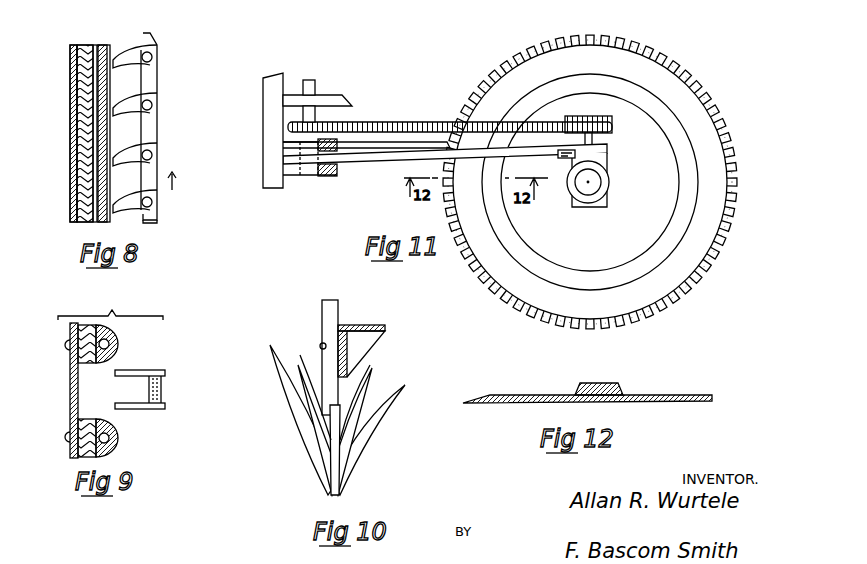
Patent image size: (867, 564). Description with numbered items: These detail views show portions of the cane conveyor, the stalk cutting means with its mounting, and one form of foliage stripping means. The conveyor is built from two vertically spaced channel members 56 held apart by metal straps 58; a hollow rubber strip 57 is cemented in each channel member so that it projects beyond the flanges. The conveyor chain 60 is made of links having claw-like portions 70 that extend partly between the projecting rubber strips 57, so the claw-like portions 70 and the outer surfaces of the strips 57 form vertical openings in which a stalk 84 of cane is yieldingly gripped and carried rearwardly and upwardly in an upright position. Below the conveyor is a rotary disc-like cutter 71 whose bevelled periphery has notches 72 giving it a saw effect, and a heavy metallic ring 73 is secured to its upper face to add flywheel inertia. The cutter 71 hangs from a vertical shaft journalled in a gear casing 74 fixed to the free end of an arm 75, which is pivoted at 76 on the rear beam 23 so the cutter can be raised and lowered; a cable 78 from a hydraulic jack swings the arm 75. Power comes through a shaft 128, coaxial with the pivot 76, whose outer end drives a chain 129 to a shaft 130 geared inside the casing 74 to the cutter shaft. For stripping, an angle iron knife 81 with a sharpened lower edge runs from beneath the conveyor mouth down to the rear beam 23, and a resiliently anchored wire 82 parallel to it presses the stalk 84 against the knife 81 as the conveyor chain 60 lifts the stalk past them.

In FIG. 11, the rear beam 23 is at (276, 158).
In FIG. 8, the channel members 56 is at (76, 150).
In FIG. 9, the channel members 56 is at (72, 350).
In FIG. 8, the rubber strip 57 is at (88, 192).
In FIG. 9, the rubber strip 57 is at (118, 336).
In FIG. 9, the metal straps 58 is at (70, 392).
In FIG. 8, the conveyor chain 60 is at (160, 127).
In FIG. 9, the conveyor chain 60 is at (179, 390).
In FIG. 8, the claw-like portions 70 is at (120, 99).
In FIG. 9, the claw-like portions 70 is at (140, 371).
In FIG. 11, the rotary disc-like cutter 71 is at (698, 123).
In FIG. 12, the rotary disc-like cutter 71 is at (521, 403).
In FIG. 11, the notches 72 is at (735, 184).
In FIG. 11, the metallic ring 73 is at (507, 237).
In FIG. 12, the metallic ring 73 is at (614, 383).
In FIG. 11, the gear casing 74 is at (610, 182).
In FIG. 11, the arm 75 is at (382, 164).
In FIG. 11, the pivot 76 is at (302, 178).
In FIG. 11, the cable 78 is at (563, 150).
In FIG. 10, the angle iron knife 81 is at (370, 338).
In FIG. 10, the wire 82 is at (322, 344).
In FIG. 10, the stalk 84 is at (339, 307).
In FIG. 11, the shaft 128 is at (316, 84).
In FIG. 11, the chain 129 is at (405, 121).
In FIG. 11, the shaft 130 is at (594, 140).